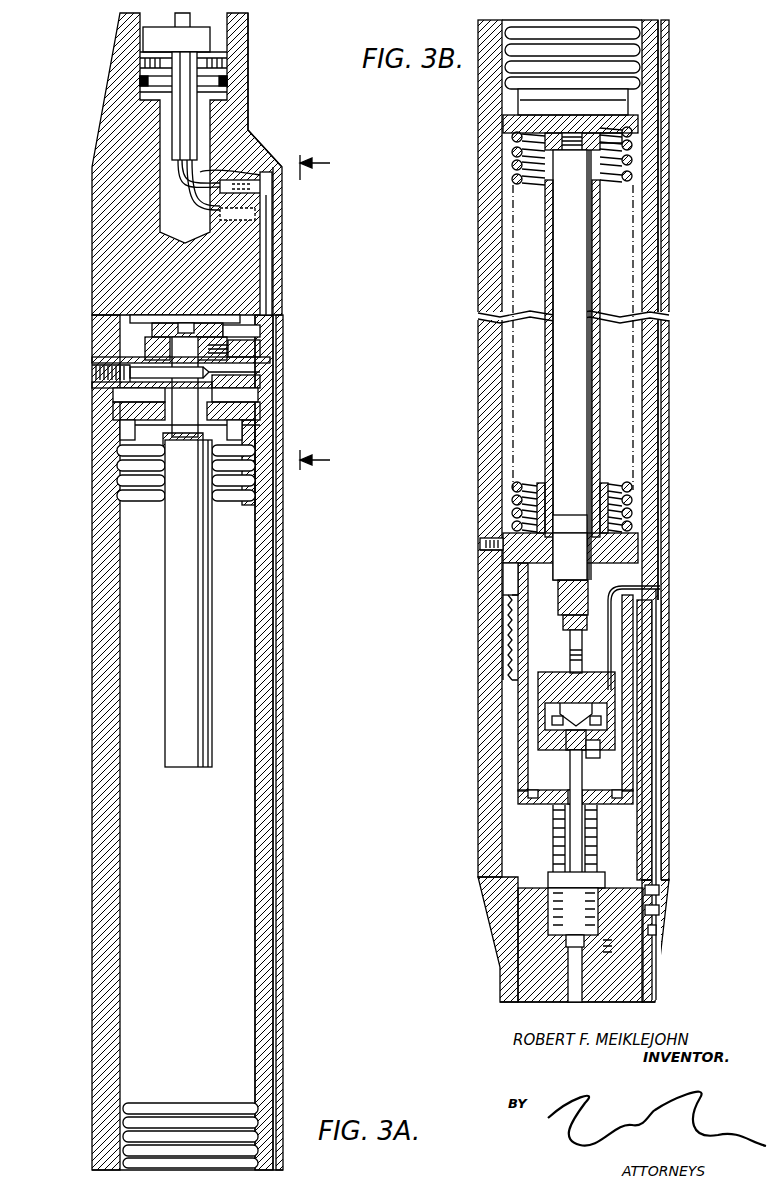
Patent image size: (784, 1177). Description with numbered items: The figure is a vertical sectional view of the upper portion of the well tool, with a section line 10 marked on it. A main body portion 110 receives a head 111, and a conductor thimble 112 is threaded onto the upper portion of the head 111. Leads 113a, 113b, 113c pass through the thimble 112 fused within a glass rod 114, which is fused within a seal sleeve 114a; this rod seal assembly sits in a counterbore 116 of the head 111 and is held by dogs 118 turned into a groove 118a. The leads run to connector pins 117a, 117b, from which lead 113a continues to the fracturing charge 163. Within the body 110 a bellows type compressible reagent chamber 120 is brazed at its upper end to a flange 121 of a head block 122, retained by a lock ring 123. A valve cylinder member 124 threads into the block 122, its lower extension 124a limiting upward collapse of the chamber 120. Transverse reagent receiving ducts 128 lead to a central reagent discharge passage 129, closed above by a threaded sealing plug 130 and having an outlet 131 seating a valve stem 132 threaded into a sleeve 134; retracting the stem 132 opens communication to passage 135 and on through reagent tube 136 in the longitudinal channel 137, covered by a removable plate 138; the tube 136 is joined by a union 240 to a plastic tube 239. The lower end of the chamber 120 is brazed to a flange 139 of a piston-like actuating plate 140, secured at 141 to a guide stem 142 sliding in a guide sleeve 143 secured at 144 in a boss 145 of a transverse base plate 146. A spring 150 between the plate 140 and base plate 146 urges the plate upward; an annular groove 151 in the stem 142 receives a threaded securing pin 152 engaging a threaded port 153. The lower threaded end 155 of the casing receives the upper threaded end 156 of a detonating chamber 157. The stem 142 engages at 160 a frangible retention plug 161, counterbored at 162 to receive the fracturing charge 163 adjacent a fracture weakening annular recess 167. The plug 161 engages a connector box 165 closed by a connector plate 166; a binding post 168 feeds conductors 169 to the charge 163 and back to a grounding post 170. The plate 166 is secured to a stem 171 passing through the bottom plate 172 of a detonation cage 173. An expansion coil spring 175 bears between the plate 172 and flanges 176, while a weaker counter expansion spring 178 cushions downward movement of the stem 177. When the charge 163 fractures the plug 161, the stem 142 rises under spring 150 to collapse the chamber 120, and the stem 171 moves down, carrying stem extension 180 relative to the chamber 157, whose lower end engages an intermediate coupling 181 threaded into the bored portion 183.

In FIG. 3A, the section line 10 is at (329, 311).
In FIG. 3A, the main body portion 110 is at (108, 555).
In FIG. 3B, the main body portion 110 is at (492, 370).
In FIG. 3A, the head 111 is at (100, 236).
In FIG. 3A, the conductor thimble 112 is at (248, 30).
In FIG. 3A, the lead 113a is at (200, 172).
In FIG. 3B, the lead 113a is at (660, 586).
In FIG. 3A, the lead 113b is at (182, 186).
In FIG. 3A, the lead 113c is at (182, 202).
In FIG. 3A, the glass rod 114 is at (178, 143).
In FIG. 3A, the seal sleeve 114a is at (142, 48).
In FIG. 3A, the counterbore 116 is at (222, 103).
In FIG. 3A, the connector pin 117a is at (258, 186).
In FIG. 3A, the connector pin 117b is at (262, 212).
In FIG. 3A, the dogs 118 is at (142, 72).
In FIG. 3A, the groove 118a is at (176, 66).
In FIG. 3A, the compressible reagent chamber 120 is at (250, 490).
In FIG. 3B, the compressible reagent chamber 120 is at (640, 45).
In FIG. 3A, the flange 121 is at (248, 432).
In FIG. 3A, the head block 122 is at (130, 422).
In FIG. 3A, the lock ring 123 is at (110, 377).
In FIG. 3A, the valve cylinder member 124 is at (240, 400).
In FIG. 3A, the lower extension 124a is at (190, 767).
In FIG. 3A, the transverse reagent receiving ducts 128 is at (170, 440).
In FIG. 3A, the central reagent discharge passage 129 is at (130, 410).
In FIG. 3A, the threaded sealing plug 130 is at (225, 322).
In FIG. 3A, the outlet 131 is at (186, 380).
In FIG. 3A, the valve stem 132 is at (102, 360).
In FIG. 3A, the sleeve 134 is at (100, 385).
In FIG. 3A, the passage 135 is at (258, 370).
In FIG. 3A, the reagent tube 136 is at (270, 592).
In FIG. 3B, the reagent tube 136 is at (650, 370).
In FIG. 3A, the longitudinal channel 137 is at (268, 655).
In FIG. 3B, the longitudinal channel 137 is at (660, 410).
In FIG. 3A, the removable plate 138 is at (282, 270).
In FIG. 3B, the removable plate 138 is at (669, 333).
In FIG. 3B, the flange 139 is at (518, 103).
In FIG. 3B, the piston-like actuating plate 140 is at (640, 124).
In FIG. 3B, the threaded connection 141 is at (632, 143).
In FIG. 3B, the guide stem 142 is at (570, 213).
In FIG. 3B, the guide sleeve 143 is at (598, 255).
In FIG. 3B, the threaded connection 144 is at (605, 508).
In FIG. 3B, the boss 145 is at (600, 522).
In FIG. 3B, the transverse base plate 146 is at (620, 546).
In FIG. 3B, the spring 150 is at (518, 153).
In FIG. 3B, the annular groove 151 is at (632, 487).
In FIG. 3B, the threaded securing pin 152 is at (520, 538).
In FIG. 3B, the threaded port 153 is at (483, 552).
In FIG. 3B, the lower threaded end 155 is at (570, 632).
In FIG. 3B, the upper threaded end 156 is at (510, 652).
In FIG. 3B, the detonating chamber 157 is at (520, 815).
In FIG. 3B, the threaded engagement 160 is at (645, 610).
In FIG. 3B, the frangible retention plug 161 is at (595, 650).
In FIG. 3B, the counterbore 162 is at (590, 665).
In FIG. 3B, the fracturing charge 163 is at (570, 658).
In FIG. 3B, the connector box 165 is at (550, 692).
In FIG. 3B, the connector plate 166 is at (560, 735).
In FIG. 3B, the fracture weakening annular recess 167 is at (508, 625).
In FIG. 3B, the binding post 168 is at (650, 752).
In FIG. 3B, the conductors 169 is at (607, 712).
In FIG. 3B, the grounding post 170 is at (572, 772).
In FIG. 3B, the stem 171 is at (560, 797).
In FIG. 3B, the bottom plate 172 is at (625, 790).
In FIG. 3B, the detonation cage 173 is at (630, 728).
In FIG. 3B, the expansion coil spring 175 is at (595, 832).
In FIG. 3B, the flanges 176 is at (555, 880).
In FIG. 3B, the stem 177 is at (560, 912).
In FIG. 3B, the counter expansion spring 178 is at (659, 890).
In FIG. 3B, the stem extension 180 is at (575, 985).
In FIG. 3B, the intermediate coupling 181 is at (640, 975).
In FIG. 3B, the bored portion 183 is at (620, 995).
In FIG. 3B, the plastic tube 239 is at (656, 935).
In FIG. 3B, the union 240 is at (659, 912).